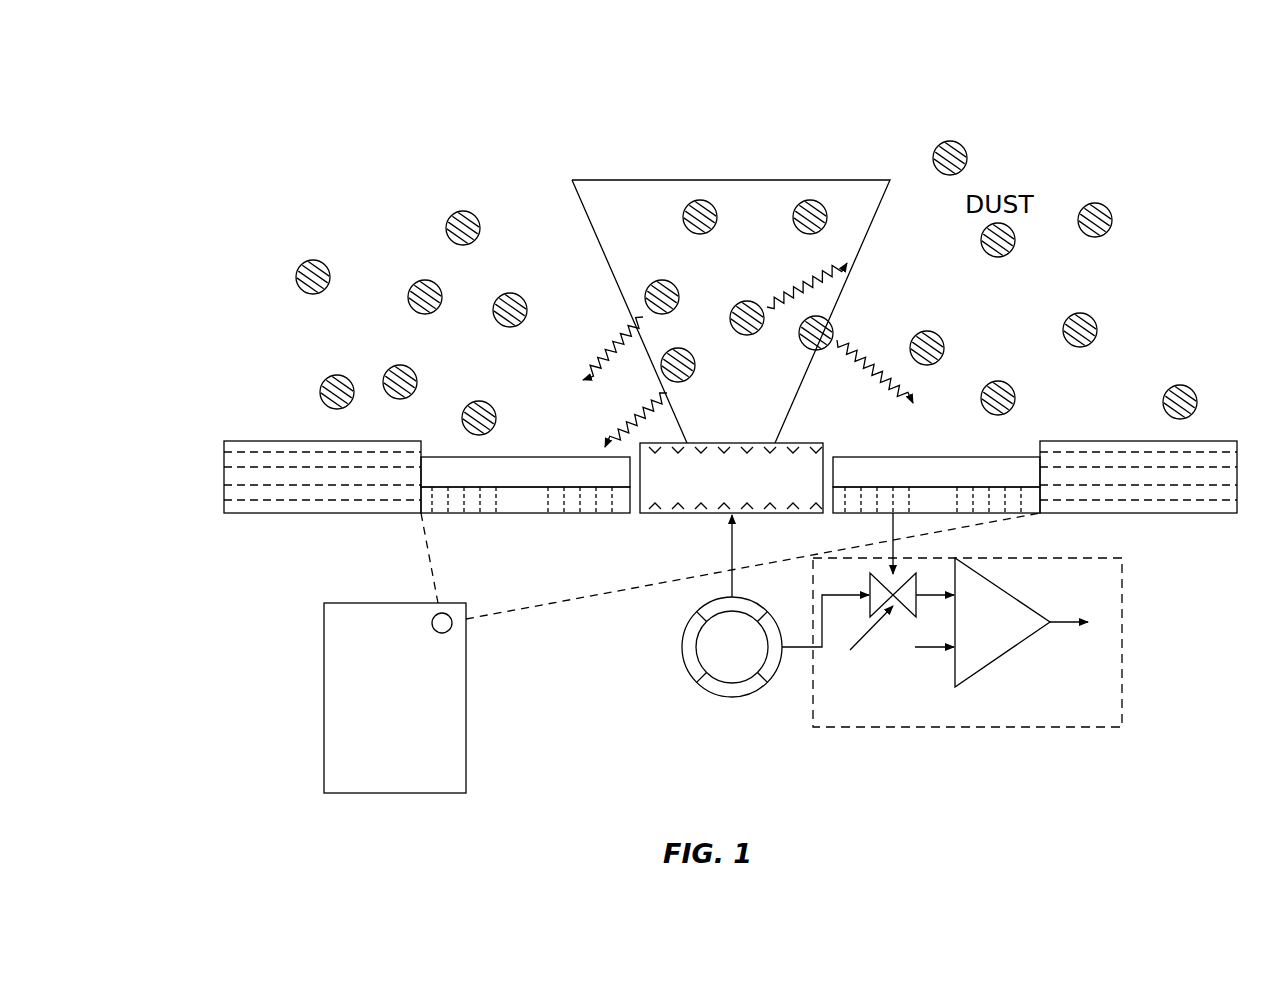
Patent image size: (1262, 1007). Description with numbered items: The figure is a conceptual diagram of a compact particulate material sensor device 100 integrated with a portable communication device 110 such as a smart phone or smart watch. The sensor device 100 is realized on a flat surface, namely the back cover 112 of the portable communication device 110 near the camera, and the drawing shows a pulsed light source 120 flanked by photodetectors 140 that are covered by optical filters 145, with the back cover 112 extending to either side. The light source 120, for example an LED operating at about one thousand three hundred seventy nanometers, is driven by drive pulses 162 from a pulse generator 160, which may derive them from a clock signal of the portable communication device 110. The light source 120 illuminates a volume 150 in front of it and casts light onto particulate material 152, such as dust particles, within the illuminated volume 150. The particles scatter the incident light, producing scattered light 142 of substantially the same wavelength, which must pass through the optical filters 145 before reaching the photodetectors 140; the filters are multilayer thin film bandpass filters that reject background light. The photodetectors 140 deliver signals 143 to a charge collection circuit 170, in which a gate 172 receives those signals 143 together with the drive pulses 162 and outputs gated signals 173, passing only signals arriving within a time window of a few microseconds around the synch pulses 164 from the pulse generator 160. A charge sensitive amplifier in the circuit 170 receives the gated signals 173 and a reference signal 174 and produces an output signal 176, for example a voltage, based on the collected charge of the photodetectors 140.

The sensor device 100 is at (253, 40).
The portable communication device 110 is at (682, 653).
The back cover 112 is at (325, 441).
The light source 120 is at (731, 443).
The photodetectors 140 is at (527, 515).
The scattered light 142 is at (873, 348).
The signals from the PDs 143 is at (891, 525).
The optical filter 145 is at (523, 457).
The illuminated volume 150 is at (731, 311).
The particulate material 152 is at (700, 199).
The pulse generator 160 is at (732, 647).
The drive pulses 162 is at (741, 543).
The synch pulses 164 is at (798, 650).
The charge collection circuit 170 is at (967, 642).
The gate 172 is at (870, 640).
The gated signals 173 is at (925, 598).
The reference signal 174 is at (928, 650).
The signal 176 is at (1061, 618).